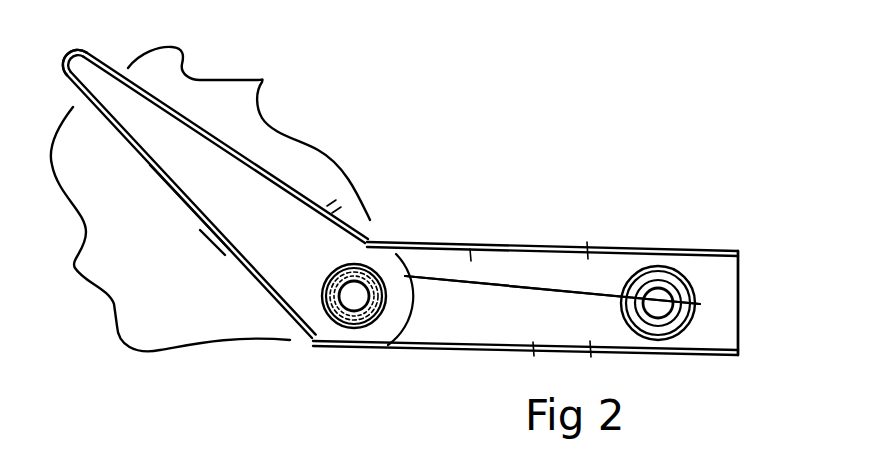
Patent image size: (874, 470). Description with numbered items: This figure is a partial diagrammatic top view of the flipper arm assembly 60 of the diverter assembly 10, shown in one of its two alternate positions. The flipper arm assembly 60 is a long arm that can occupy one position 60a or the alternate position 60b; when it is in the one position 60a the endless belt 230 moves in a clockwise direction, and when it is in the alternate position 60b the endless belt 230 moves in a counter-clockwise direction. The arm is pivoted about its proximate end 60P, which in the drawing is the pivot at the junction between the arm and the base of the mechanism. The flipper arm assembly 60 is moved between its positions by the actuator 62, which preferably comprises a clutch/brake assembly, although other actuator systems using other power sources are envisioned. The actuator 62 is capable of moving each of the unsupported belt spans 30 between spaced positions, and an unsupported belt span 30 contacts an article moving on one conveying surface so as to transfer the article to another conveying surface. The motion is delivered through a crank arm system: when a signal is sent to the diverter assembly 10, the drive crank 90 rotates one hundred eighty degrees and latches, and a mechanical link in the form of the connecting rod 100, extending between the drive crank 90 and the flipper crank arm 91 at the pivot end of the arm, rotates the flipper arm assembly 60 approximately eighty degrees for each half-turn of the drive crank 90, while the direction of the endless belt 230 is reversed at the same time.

The diverter assembly 10 is at (535, 112).
The unsupported belt span 30 is at (199, 198).
The flipper arm assembly 60 is at (266, 233).
The one position 60a is at (99, 64).
The alternate position 60b is at (184, 218).
The proximate end 60P is at (360, 260).
The actuator 62 is at (557, 278).
The drive crank 90 is at (695, 306).
The flipper crank arm 91 is at (405, 274).
The connecting rod 100 is at (470, 283).
The endless belt 230 is at (208, 242).